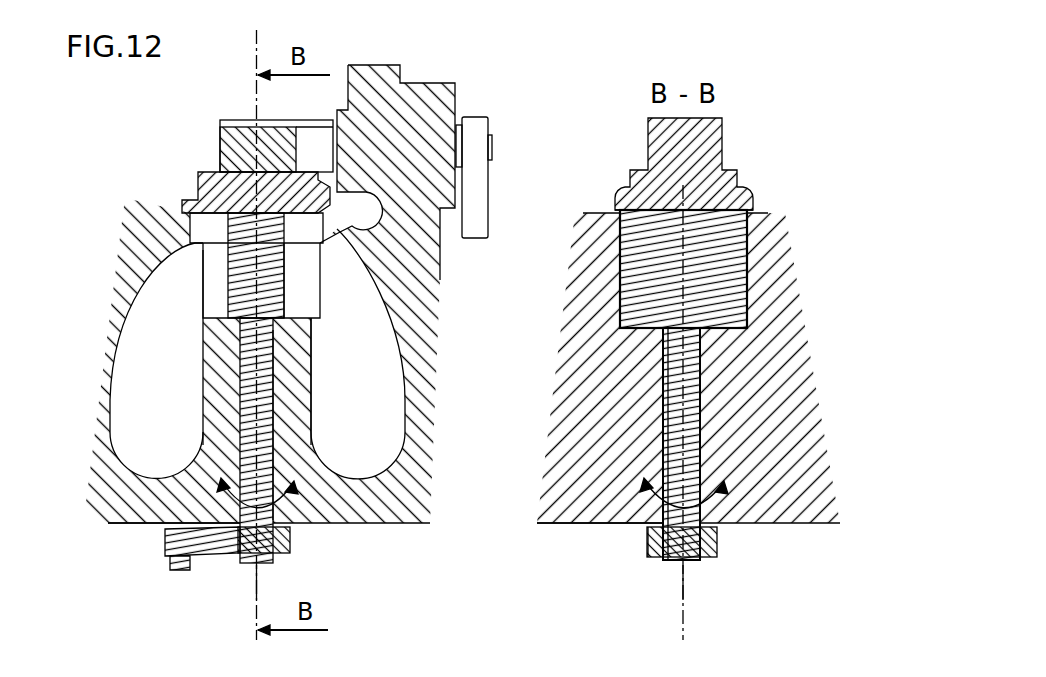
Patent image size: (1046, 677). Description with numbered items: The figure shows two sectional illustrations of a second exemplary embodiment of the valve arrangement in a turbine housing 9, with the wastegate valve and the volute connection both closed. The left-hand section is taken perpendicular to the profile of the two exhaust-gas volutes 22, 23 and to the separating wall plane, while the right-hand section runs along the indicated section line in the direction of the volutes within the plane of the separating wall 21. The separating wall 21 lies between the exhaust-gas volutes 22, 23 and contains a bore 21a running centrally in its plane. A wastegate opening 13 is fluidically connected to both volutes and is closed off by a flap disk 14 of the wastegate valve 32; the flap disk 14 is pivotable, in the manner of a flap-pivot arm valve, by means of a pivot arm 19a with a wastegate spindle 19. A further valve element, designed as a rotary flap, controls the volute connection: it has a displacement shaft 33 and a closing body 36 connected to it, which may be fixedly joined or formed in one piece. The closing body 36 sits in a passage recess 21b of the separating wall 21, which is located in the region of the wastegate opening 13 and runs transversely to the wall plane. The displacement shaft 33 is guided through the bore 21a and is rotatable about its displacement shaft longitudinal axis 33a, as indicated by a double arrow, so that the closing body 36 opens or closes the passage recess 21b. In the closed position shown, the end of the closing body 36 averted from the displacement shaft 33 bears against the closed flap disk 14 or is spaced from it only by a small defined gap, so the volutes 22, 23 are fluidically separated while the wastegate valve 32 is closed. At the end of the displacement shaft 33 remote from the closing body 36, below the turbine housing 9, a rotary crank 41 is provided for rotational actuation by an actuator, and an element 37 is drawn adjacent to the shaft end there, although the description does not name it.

The turbine housing 9 is at (140, 512).
The wastegate opening 13 is at (213, 230).
The flap disk 14 is at (188, 202).
The wastegate spindle 19 is at (489, 146).
The pivot arm 19a is at (313, 140).
The separating wall 21 is at (212, 369).
The bore 21a is at (272, 400).
The passage recess 21b is at (220, 288).
The exhaust-gas volute 22 is at (177, 462).
The exhaust-gas volute 23 is at (373, 457).
The wastegate valve 32 is at (196, 153).
The displacement shaft 33 is at (270, 450).
The displacement shaft longitudinal axis 33a is at (263, 578).
The closing body 36 is at (238, 263).
The nut 37 is at (292, 536).
The rotary crank 41 is at (215, 540).